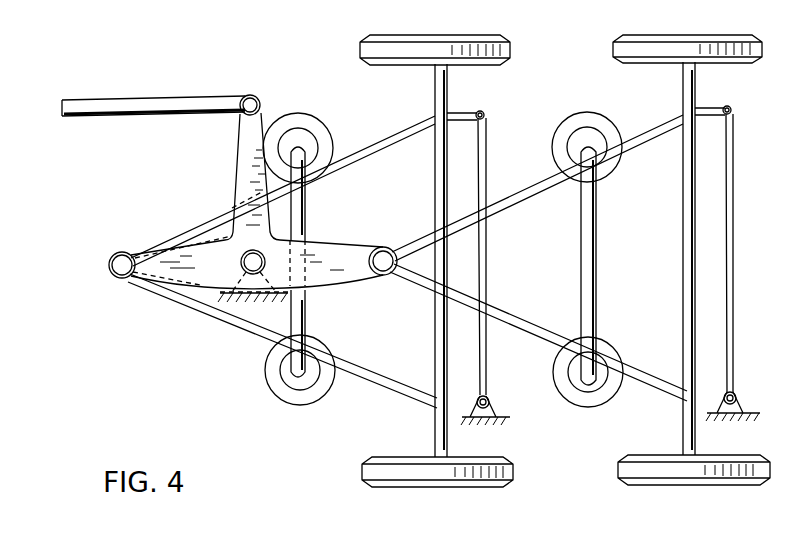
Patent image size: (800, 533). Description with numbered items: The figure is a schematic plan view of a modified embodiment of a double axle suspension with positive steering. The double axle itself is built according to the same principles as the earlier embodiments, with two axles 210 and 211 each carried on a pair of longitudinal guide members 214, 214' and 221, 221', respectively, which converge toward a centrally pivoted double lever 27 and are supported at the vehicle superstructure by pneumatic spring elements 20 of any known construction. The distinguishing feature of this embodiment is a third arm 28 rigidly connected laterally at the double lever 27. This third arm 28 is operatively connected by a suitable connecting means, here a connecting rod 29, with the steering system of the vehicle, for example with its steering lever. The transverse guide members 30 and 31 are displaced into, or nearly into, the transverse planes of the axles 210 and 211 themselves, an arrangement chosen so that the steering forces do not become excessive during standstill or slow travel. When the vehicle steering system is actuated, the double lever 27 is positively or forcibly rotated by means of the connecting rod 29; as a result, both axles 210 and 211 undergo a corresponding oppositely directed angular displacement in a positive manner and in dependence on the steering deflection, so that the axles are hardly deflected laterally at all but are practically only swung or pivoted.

The pneumatic spring elements 20 is at (297, 128).
The double lever 27 is at (176, 280).
The third arm 28 is at (241, 168).
The connecting rod 29 is at (155, 106).
The transverse guide member 30 is at (487, 158).
The transverse guide member 31 is at (732, 300).
The axle 210 is at (435, 437).
The axle 211 is at (695, 437).
The connecting rod 214 is at (282, 341).
The connecting rod 214' is at (283, 191).
The connecting rod 221 is at (538, 352).
The connecting rod 221' is at (537, 174).